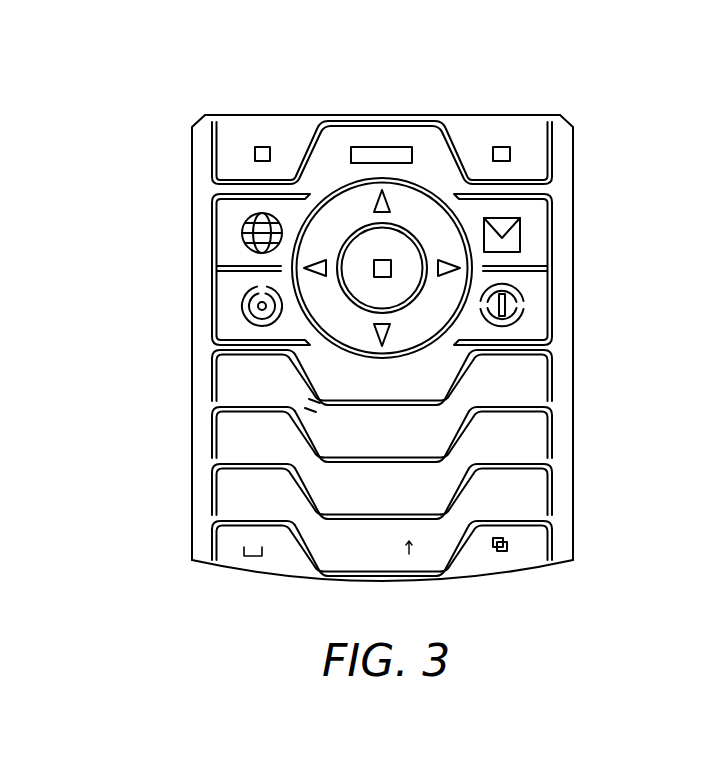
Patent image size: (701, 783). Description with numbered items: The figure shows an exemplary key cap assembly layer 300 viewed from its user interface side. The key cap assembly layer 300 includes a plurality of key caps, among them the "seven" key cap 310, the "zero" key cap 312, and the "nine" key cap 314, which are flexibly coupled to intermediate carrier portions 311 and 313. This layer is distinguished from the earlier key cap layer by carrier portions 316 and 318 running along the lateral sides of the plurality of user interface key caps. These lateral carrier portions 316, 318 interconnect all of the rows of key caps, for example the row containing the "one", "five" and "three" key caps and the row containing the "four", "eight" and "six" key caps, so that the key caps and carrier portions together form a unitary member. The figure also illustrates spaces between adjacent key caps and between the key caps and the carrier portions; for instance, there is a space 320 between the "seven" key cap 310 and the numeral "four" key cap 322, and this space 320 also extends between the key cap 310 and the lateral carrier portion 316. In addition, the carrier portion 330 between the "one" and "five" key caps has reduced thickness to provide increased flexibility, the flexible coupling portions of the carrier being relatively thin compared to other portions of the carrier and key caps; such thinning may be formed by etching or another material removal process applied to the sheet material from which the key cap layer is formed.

The key cap assembly layer 300 is at (72, 72).
The "7" key cap 310 is at (228, 491).
The intermediate carrier portion 311 is at (312, 518).
The "0" key cap 312 is at (384, 566).
The intermediate carrier portion 313 is at (455, 518).
The "9" key cap 314 is at (545, 494).
The lateral carrier portion 316 is at (193, 190).
The lateral carrier portion 318 is at (573, 190).
The space 320 is at (218, 462).
The "4" key cap 322 is at (224, 433).
The carrier portion 330 is at (308, 414).